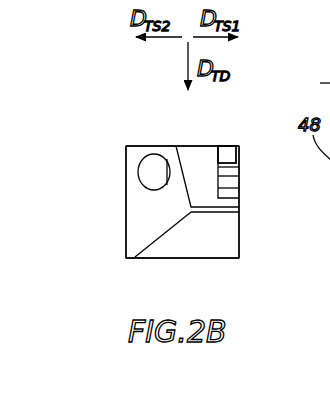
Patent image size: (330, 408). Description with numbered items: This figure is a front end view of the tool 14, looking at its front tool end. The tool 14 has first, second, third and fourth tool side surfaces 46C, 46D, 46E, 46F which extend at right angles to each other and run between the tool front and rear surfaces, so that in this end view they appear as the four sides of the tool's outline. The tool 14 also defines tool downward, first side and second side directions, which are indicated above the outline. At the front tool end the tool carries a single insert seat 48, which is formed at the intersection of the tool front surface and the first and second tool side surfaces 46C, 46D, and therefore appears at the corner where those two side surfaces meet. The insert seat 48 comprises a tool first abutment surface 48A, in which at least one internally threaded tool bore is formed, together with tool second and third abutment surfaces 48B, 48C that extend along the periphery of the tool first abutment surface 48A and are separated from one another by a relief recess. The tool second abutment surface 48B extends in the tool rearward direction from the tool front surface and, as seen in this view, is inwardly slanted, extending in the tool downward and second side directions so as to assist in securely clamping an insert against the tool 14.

The tool 14 is at (133, 136).
The first tool side surface 46C is at (182, 145).
The second tool side surface 46D is at (245, 243).
The third tool side surface 46E is at (181, 263).
The fourth tool side surface 46F is at (123, 201).
The insert seat 48 is at (246, 153).
The tool first abutment surface 48A is at (236, 178).
The tool second abutment surface 48B is at (229, 190).
The tool third abutment surface 48C is at (229, 150).